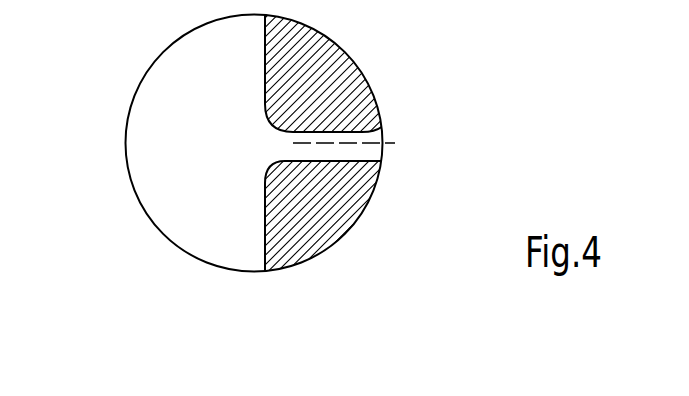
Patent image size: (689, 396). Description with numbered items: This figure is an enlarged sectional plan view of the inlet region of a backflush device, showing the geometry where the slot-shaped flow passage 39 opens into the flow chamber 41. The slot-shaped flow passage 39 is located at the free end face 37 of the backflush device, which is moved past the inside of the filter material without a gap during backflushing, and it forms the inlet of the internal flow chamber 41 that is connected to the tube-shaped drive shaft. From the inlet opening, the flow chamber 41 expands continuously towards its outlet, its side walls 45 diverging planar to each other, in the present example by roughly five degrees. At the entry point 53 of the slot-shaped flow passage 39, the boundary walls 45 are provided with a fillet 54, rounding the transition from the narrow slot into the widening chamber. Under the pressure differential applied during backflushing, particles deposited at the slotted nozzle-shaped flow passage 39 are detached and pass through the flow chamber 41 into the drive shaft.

The free end face 37 is at (267, 220).
The slot-shaped flow passage 39 is at (290, 153).
The flow chamber 41 is at (365, 150).
The side walls 45 is at (345, 126).
The entry point 53 is at (293, 144).
The fillet 54 is at (290, 133).